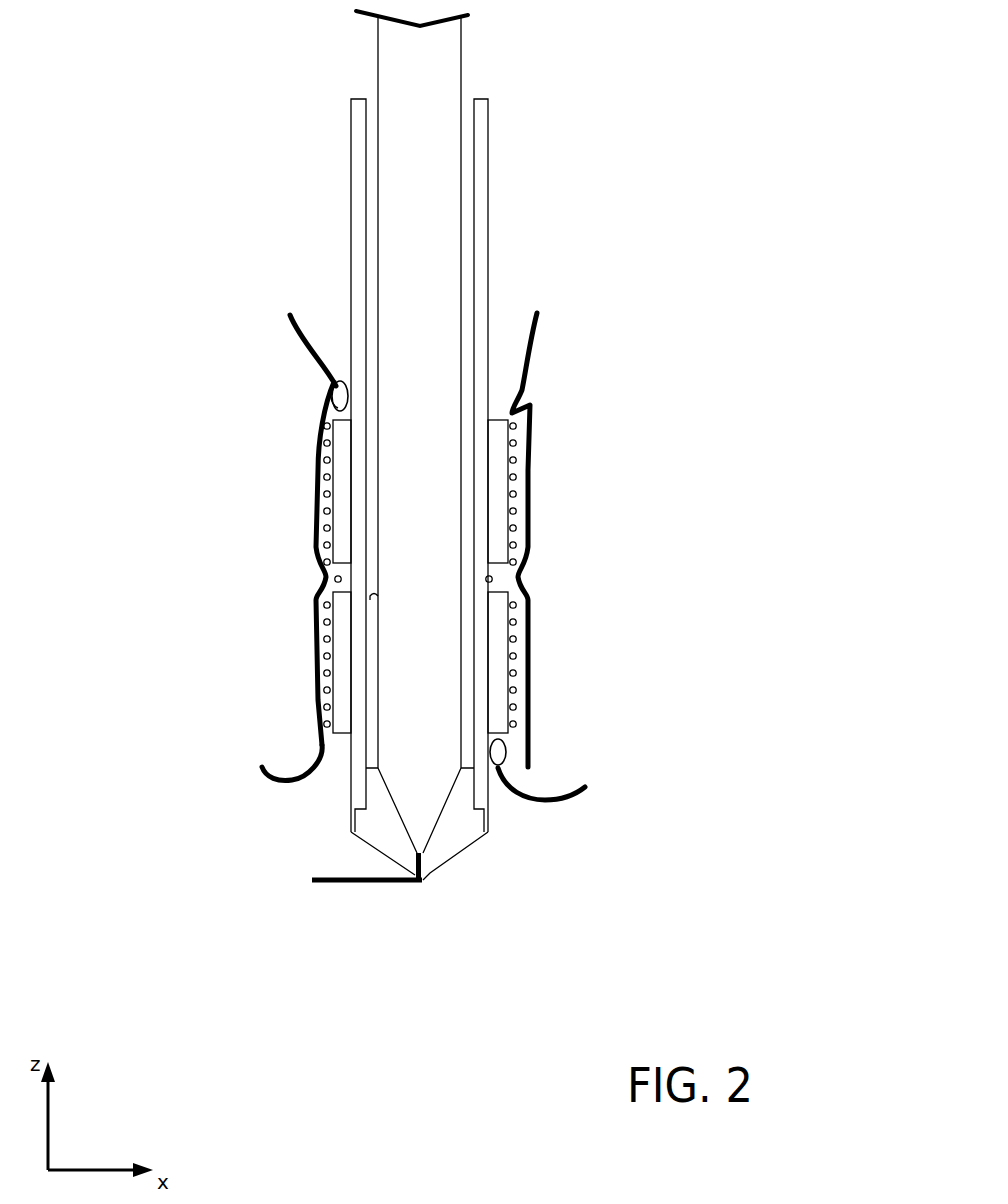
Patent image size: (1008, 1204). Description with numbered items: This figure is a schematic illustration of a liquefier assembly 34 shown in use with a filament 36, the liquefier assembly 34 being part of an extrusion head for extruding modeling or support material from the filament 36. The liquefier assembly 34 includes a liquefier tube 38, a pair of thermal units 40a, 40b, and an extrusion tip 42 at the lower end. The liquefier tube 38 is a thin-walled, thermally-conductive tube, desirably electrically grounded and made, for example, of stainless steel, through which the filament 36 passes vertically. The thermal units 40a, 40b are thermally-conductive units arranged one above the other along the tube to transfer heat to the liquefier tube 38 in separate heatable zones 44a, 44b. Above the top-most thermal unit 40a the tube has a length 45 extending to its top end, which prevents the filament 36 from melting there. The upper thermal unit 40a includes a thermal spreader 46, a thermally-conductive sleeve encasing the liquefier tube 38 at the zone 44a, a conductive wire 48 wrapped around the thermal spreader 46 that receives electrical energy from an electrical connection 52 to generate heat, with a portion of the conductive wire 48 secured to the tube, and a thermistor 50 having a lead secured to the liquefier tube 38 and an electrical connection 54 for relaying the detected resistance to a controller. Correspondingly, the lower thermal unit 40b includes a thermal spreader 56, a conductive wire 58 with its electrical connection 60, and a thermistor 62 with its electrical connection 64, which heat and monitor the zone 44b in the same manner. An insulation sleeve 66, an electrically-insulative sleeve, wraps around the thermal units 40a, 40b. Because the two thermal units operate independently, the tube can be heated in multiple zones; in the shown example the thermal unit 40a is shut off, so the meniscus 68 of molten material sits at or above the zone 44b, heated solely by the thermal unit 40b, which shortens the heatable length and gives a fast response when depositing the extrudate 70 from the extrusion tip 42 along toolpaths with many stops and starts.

The liquefier assembly 34 is at (170, 65).
The filament 36 is at (432, 98).
The liquefier tube 38 is at (358, 175).
The thermal unit 40a is at (650, 495).
The thermal unit 40b is at (657, 663).
The extrusion tip 42 is at (460, 835).
The zone 44a is at (170, 402).
The zone 44b is at (170, 579).
The length 45 is at (662, 103).
The thermal spreader 46 is at (328, 495).
The conductive wire 48 is at (328, 548).
The thermistor 50 is at (330, 382).
The electrical connection 52 is at (537, 313).
The electrical connection 54 is at (310, 343).
The thermal spreader 56 is at (310, 635).
The conductive wire 58 is at (317, 695).
The electrical connection 60 is at (283, 787).
The thermistor 62 is at (507, 758).
The electrical connection 64 is at (553, 807).
The insulation sleeve 66 is at (317, 433).
The meniscus 68 is at (465, 592).
The extrudate 70 is at (378, 883).